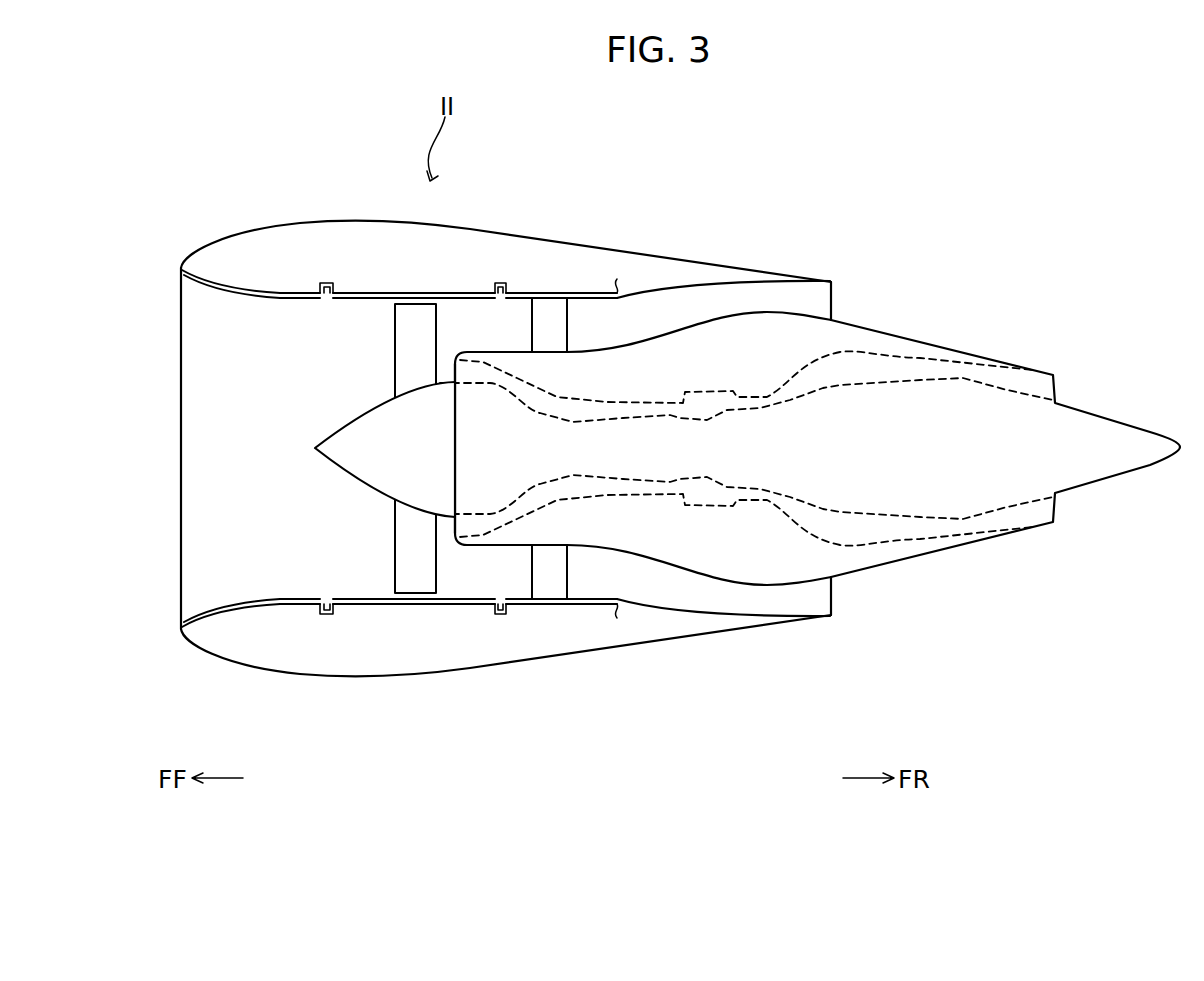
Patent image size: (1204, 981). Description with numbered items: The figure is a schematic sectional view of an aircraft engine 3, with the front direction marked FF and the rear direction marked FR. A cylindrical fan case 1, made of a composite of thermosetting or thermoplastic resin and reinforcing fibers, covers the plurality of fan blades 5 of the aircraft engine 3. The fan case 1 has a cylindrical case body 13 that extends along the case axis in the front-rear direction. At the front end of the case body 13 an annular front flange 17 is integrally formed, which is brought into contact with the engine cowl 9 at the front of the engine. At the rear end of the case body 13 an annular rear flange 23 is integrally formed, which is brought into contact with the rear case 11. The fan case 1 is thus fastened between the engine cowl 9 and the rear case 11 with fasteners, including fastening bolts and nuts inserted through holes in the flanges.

The fan case 1 is at (400, 400).
The aircraft engine 3 is at (740, 232).
The fan blades 5 is at (402, 377).
The engine cowl 9 is at (280, 292).
The rear case 11 is at (565, 293).
The case body 13 is at (460, 293).
The front flange 17 is at (330, 285).
The rear flange 23 is at (497, 283).